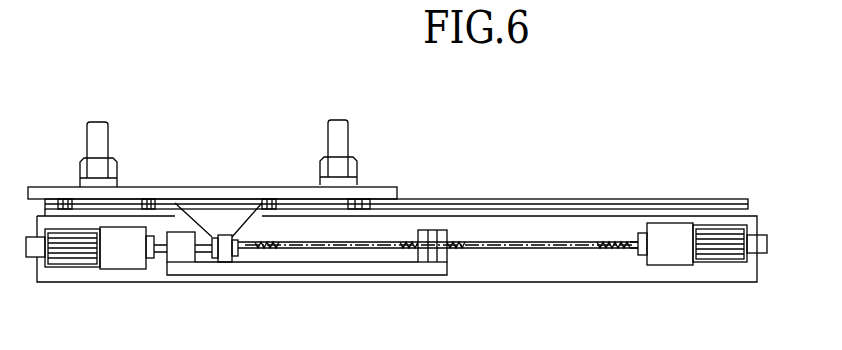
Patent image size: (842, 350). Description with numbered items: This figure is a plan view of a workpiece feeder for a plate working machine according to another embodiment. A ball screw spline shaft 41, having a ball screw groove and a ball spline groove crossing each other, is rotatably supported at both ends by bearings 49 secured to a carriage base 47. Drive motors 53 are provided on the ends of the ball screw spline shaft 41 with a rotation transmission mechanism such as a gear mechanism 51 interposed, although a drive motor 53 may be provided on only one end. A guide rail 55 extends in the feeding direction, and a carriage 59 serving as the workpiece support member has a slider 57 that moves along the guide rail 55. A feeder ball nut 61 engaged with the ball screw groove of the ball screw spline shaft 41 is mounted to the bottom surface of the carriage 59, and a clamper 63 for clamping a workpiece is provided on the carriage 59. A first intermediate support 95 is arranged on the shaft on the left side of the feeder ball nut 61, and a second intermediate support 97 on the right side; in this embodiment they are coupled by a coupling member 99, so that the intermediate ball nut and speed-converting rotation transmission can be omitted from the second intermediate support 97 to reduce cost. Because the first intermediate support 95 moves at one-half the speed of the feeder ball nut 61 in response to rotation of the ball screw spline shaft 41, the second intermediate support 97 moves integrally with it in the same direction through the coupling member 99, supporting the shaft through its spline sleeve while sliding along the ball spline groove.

The ball screw spline shaft 41 is at (542, 250).
The carriage base 47 is at (747, 268).
The bearings 49 is at (150, 258).
The gear mechanism 51 is at (120, 262).
The drive motors 53 is at (75, 267).
The guide rail 55 is at (576, 198).
The slider 57 is at (68, 200).
The carriage 59 is at (230, 212).
The feeder ball nut 61 is at (222, 262).
The clamper 63 is at (95, 130).
The first intermediate support 95 is at (185, 228).
The second intermediate support 97 is at (433, 228).
The coupling member 99 is at (263, 268).